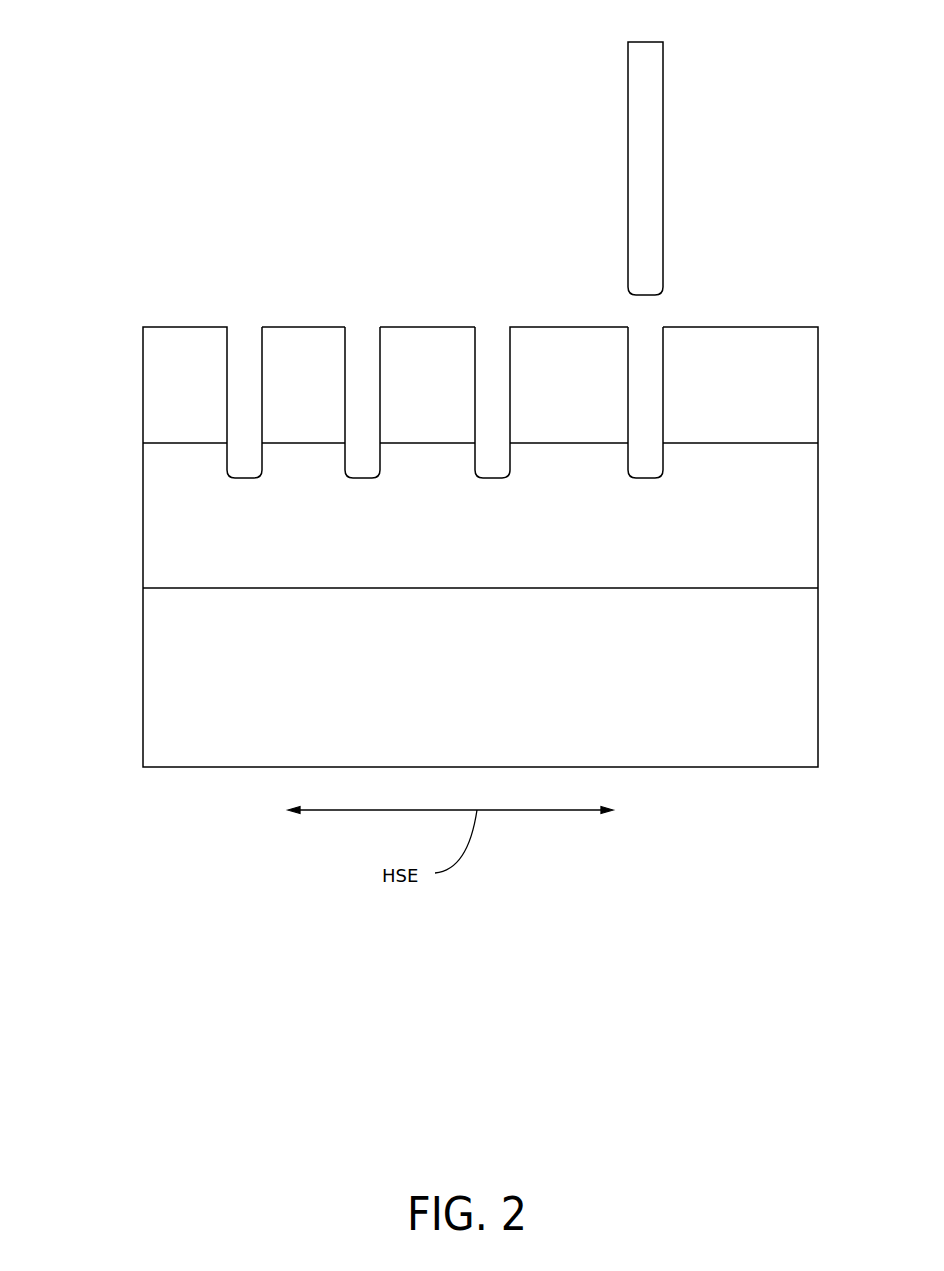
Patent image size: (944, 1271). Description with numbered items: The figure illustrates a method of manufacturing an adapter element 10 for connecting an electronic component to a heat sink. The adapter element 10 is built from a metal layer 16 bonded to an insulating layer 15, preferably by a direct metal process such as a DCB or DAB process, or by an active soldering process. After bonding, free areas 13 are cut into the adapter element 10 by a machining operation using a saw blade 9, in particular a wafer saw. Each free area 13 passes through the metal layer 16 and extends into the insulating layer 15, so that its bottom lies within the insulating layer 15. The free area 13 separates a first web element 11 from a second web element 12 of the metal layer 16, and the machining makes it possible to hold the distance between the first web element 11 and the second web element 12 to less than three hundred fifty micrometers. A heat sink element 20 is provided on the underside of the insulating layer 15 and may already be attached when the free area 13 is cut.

The saw blade 9 is at (663, 97).
The adapter element 10 is at (830, 327).
The first web element 11 is at (287, 370).
The second web element 12 is at (420, 377).
The free area 13 is at (643, 422).
The insulating layer 15 is at (128, 522).
The metal layer 16 is at (128, 395).
The heat sink element 20 is at (421, 687).